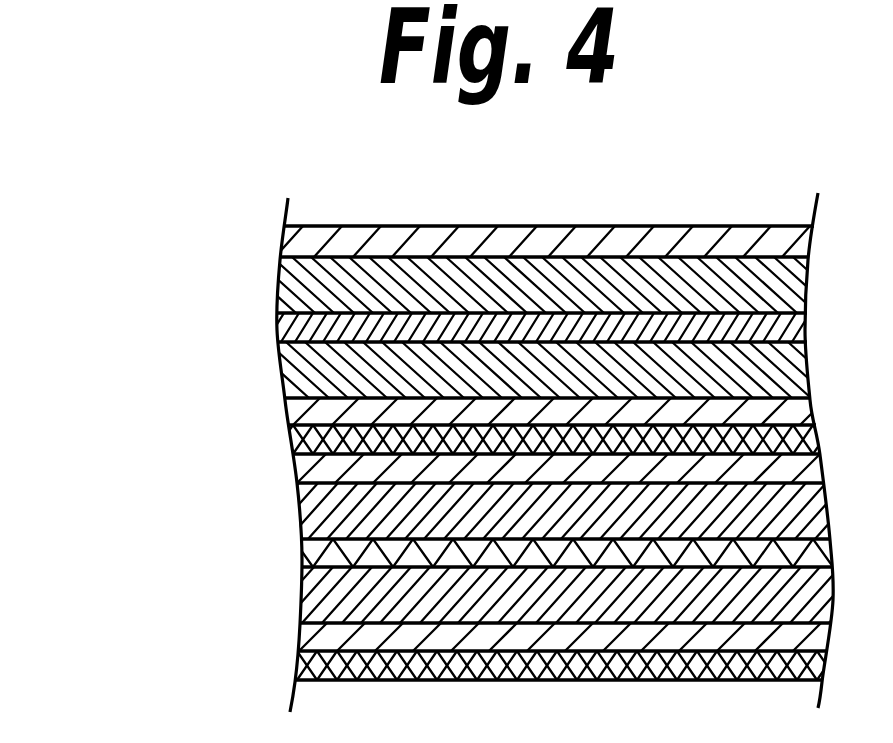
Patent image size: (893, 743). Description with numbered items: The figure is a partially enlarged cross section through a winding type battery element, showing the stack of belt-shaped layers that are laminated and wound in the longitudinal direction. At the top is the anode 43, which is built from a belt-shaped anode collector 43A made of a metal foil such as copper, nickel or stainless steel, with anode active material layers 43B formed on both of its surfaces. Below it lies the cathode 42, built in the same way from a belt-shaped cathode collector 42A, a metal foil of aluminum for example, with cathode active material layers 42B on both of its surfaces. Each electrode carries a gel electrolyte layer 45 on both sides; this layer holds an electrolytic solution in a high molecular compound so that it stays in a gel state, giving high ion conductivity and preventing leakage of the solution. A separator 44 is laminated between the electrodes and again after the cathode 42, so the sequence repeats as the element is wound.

The cathode 42 is at (160, 515).
The cathode collector 42A is at (330, 552).
The cathode active material layers 42B is at (330, 507).
The anode 43 is at (160, 278).
The anode collector 43A is at (307, 330).
The anode active material layers 43B is at (317, 287).
The separator 44 is at (303, 440).
The gel electrolyte layer 45 is at (317, 238).